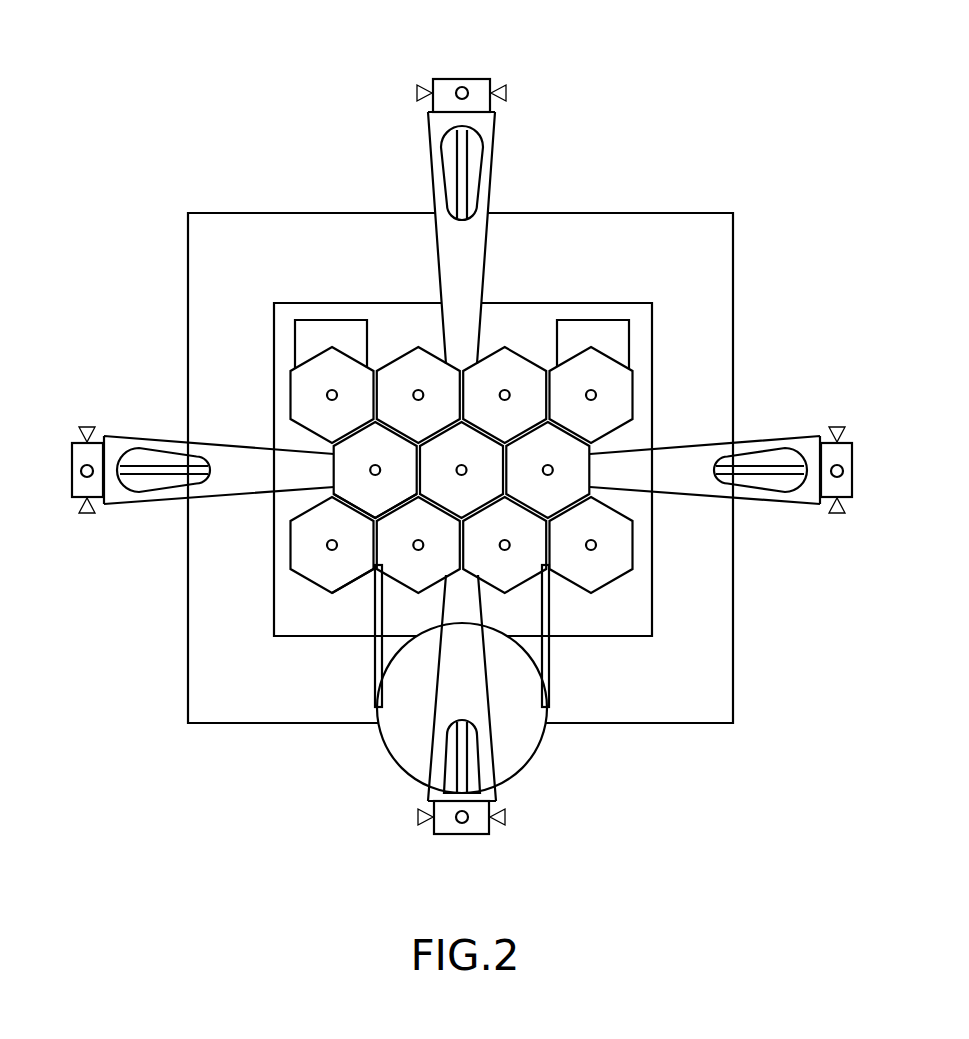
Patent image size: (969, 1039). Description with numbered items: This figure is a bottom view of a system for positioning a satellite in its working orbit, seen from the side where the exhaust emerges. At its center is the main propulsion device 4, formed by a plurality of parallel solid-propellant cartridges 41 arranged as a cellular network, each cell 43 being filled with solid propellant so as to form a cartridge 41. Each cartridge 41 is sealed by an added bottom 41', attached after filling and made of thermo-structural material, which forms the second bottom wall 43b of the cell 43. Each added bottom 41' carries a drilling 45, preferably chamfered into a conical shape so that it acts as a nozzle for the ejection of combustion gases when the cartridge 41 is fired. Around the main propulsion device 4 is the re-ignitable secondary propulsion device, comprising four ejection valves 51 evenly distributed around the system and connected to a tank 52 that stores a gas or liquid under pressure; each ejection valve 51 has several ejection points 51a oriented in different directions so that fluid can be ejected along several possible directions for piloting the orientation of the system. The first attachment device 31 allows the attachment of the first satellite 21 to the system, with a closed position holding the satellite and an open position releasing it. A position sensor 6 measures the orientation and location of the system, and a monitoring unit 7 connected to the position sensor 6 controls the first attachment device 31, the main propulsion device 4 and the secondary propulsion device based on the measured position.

The main propulsion device 4 is at (512, 345).
The position sensor 6 is at (328, 337).
The monitoring unit 7 is at (592, 338).
The first satellite 21 is at (722, 243).
The first attachment device 31 is at (642, 603).
The solid-propellant cartridge 41 is at (602, 432).
The added bottom 41' is at (372, 587).
The cell 43 is at (402, 370).
The second bottom wall 43b is at (303, 386).
The drilling 45 is at (370, 470).
The ejection valve 51 is at (462, 79).
The ejection point 51a is at (417, 91).
The tank 52 is at (402, 753).